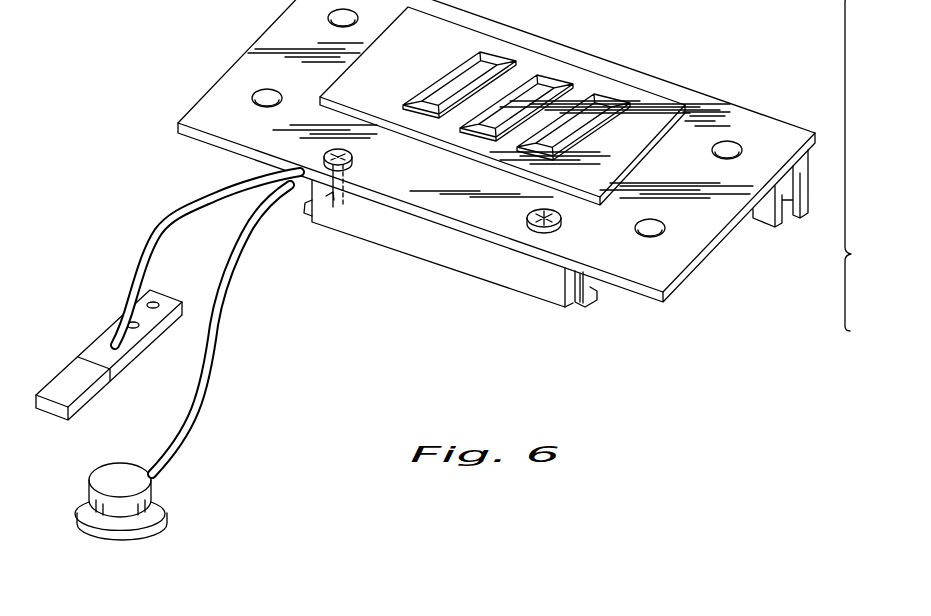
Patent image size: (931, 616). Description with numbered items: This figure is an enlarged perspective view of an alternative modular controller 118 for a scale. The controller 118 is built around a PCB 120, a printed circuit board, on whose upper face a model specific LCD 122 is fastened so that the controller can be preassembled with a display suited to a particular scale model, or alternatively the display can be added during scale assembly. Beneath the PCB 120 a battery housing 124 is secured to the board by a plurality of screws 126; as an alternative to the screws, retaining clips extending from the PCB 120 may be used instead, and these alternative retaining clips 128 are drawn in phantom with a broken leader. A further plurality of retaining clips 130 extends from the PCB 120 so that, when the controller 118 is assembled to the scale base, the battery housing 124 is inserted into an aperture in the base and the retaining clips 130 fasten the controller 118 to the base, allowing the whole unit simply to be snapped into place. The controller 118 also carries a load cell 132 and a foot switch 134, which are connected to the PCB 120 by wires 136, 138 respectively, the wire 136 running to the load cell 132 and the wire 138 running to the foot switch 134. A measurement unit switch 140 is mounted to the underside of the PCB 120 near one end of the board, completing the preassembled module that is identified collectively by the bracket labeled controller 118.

The modular controller 118 is at (867, 165).
The PCB 120 is at (687, 89).
The model specific LCD 122 is at (540, 52).
The battery housing 124 is at (493, 287).
The screws 126 is at (562, 222).
The retaining clips 128 is at (343, 207).
The retaining clips 130 is at (588, 303).
The load cell 132 is at (90, 362).
The foot switch 134 is at (168, 512).
The wire 136 is at (217, 195).
The wire 138 is at (213, 357).
The measurement unit switch 140 is at (783, 228).